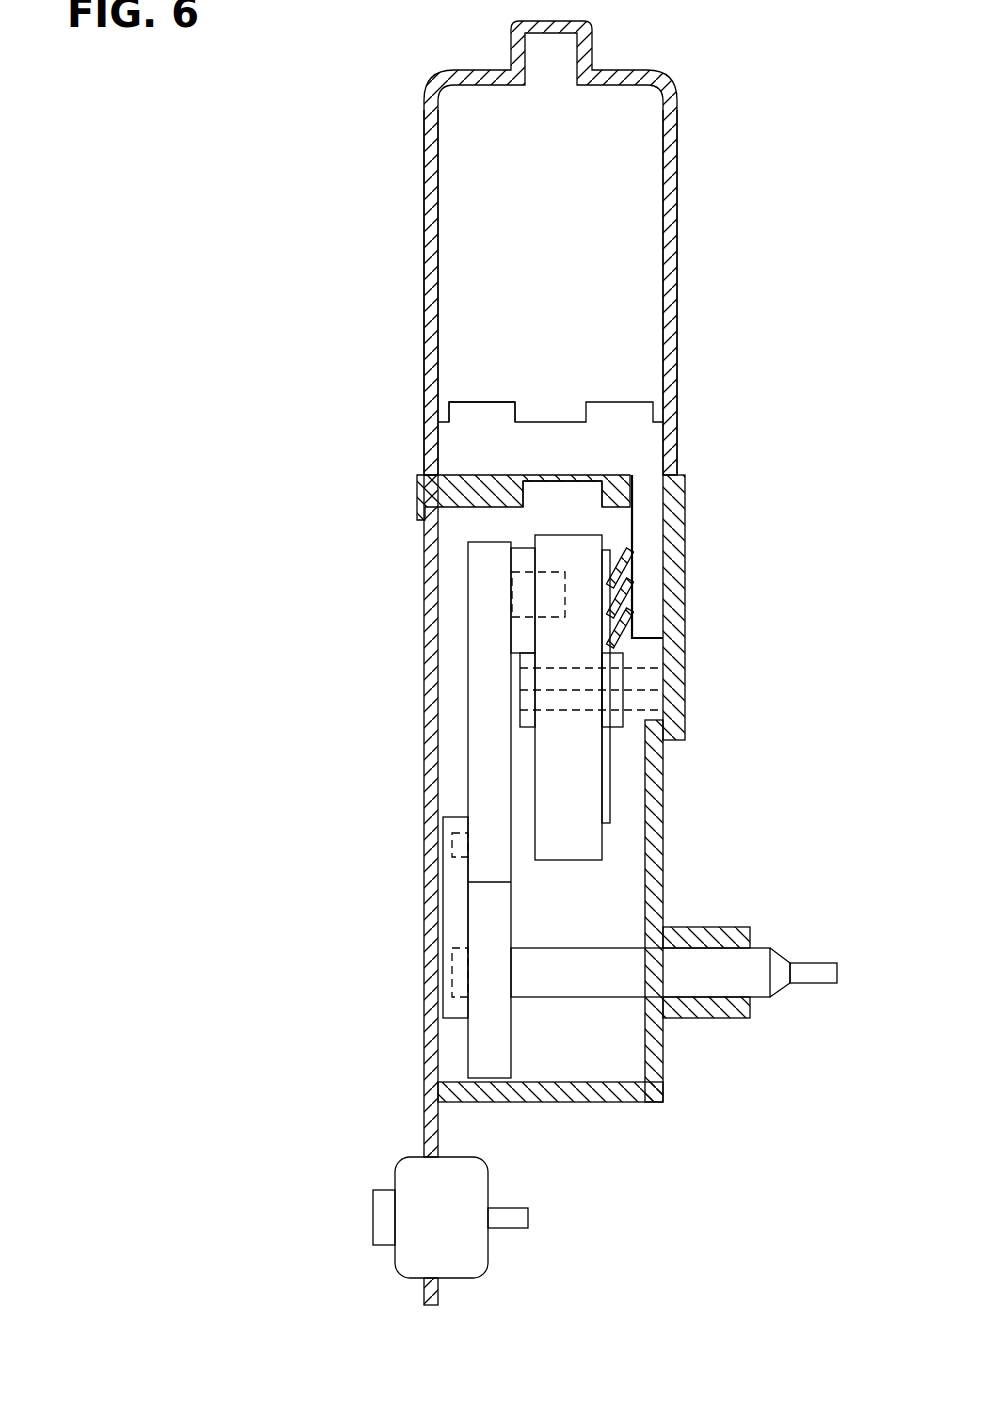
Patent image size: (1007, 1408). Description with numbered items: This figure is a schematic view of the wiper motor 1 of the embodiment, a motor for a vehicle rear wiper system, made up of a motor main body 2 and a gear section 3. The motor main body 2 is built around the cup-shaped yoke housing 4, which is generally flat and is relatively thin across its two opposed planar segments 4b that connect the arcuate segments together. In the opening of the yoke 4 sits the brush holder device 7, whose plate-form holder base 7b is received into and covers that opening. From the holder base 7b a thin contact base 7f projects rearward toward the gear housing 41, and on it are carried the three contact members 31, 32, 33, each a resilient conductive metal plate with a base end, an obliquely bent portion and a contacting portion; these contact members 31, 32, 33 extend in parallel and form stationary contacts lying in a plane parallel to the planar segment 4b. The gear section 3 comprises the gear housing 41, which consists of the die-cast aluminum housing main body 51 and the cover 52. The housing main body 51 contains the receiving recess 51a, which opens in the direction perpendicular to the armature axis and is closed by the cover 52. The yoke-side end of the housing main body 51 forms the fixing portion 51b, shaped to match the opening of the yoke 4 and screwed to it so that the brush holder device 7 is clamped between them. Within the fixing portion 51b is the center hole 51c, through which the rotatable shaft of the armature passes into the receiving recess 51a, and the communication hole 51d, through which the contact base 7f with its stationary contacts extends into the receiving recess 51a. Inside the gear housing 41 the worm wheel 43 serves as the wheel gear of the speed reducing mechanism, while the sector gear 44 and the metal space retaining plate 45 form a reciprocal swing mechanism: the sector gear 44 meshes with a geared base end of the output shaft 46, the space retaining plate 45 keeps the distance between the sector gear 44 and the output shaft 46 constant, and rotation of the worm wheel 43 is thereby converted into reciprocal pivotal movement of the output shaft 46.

The wiper motor 1 is at (275, 458).
The motor main body 2 is at (327, 455).
The gear section 3 is at (327, 538).
The yoke housing 4 is at (677, 84).
The planar segment 4b is at (428, 248).
The brush holder device 7 is at (584, 547).
The holder base 7b is at (467, 408).
The contact base 7f is at (655, 500).
The contact member 31 is at (627, 557).
The contact member 32 is at (627, 587).
The contact member 33 is at (627, 615).
The gear housing 41 is at (358, 1047).
The worm wheel 43 is at (565, 850).
The sector gear 44 is at (488, 767).
The space retaining plate 45 is at (455, 906).
The output shaft 46 is at (570, 985).
The housing main body 51 is at (547, 789).
The receiving recess 51a is at (590, 1082).
The fixing portion 51b is at (425, 490).
The center hole 51c is at (524, 490).
The communication hole 51d is at (636, 496).
The cover 52 is at (430, 1050).